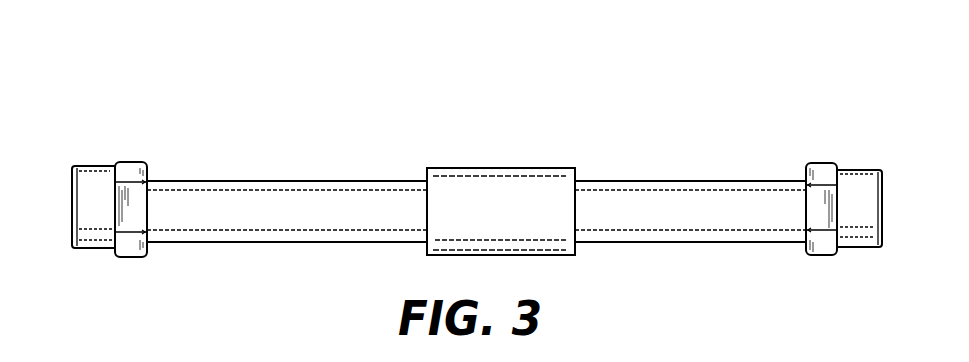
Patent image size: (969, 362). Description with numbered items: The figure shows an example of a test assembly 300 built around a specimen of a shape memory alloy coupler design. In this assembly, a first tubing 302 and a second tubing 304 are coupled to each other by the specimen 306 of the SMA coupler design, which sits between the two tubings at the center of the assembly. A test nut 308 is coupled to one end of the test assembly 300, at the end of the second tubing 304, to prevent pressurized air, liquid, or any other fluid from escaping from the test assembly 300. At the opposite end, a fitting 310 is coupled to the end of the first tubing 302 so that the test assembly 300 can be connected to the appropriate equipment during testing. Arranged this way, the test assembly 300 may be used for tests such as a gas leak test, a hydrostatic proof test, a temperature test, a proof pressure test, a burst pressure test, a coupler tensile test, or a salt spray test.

The test assembly 300 is at (730, 82).
The first tubing 302 is at (278, 197).
The second tubing 304 is at (672, 197).
The specimen 306 is at (524, 187).
The test nut 308 is at (852, 187).
The fitting 310 is at (92, 182).